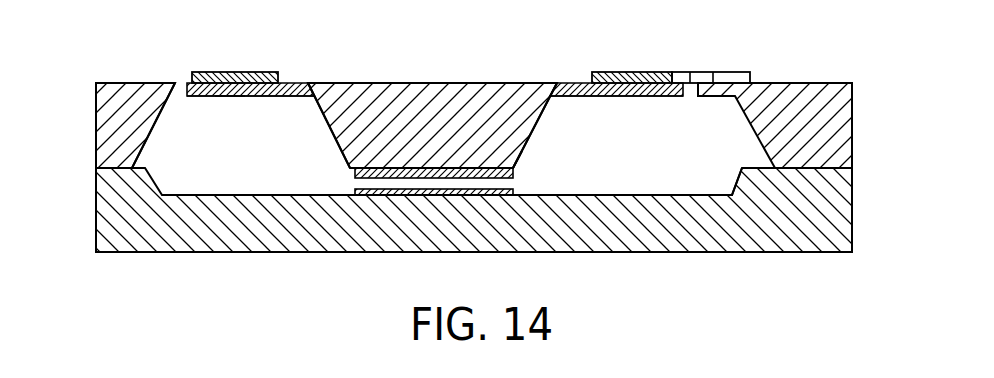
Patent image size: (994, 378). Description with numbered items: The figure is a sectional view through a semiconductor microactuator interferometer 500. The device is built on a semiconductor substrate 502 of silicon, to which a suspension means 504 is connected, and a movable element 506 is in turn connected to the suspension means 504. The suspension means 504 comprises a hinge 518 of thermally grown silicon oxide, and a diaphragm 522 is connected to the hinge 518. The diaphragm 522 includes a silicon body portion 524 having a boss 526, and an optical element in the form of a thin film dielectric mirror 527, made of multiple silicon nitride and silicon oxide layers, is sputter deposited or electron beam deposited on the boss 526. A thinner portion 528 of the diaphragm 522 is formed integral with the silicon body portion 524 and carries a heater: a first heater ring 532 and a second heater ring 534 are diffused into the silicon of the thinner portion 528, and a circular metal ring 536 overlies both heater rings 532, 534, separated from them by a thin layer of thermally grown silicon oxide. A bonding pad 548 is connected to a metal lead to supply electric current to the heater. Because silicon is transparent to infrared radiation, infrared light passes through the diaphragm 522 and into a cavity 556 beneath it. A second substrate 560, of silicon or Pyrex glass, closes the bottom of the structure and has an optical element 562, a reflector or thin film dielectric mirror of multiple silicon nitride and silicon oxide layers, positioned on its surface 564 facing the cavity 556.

The semiconductor microactuator interferometer 500 is at (479, 149).
The semiconductor substrate 502 is at (820, 86).
The suspension means 504 is at (692, 107).
The movable element 506 is at (438, 83).
The hinge 518 is at (177, 86).
The diaphragm 522 is at (531, 133).
The silicon body portion 524 is at (335, 142).
The boss 526 is at (519, 160).
The thin film dielectric mirror 527 is at (403, 168).
The thinner portion 528 is at (230, 97).
The first heater ring 532 is at (203, 94).
The second heater ring 534 is at (241, 95).
The circular metal ring 536 is at (240, 72).
The bonding pad 548 is at (744, 72).
The cavity 556 is at (254, 185).
The second substrate 560 is at (487, 255).
The optical element 562 is at (440, 196).
The surface 564 is at (637, 194).